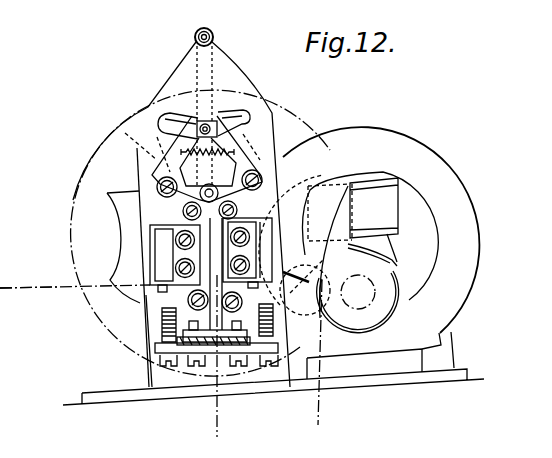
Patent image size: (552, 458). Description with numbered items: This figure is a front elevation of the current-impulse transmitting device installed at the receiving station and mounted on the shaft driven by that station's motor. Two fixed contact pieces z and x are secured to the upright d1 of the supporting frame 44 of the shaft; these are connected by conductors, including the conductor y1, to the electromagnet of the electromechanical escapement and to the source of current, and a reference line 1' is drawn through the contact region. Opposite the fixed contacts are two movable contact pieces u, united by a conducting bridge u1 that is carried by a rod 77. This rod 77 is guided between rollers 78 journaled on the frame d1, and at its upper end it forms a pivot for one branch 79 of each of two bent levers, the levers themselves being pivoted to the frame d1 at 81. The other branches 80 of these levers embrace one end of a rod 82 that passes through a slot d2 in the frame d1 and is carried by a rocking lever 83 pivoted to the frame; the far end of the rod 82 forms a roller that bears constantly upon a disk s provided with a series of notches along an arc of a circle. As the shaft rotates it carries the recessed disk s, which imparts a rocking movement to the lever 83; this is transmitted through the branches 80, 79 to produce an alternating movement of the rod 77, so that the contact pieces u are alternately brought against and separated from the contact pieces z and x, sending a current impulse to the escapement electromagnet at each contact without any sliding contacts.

The upright d1 is at (172, 83).
The slot d2 is at (172, 123).
The rocking lever 83 is at (214, 82).
The rod 82 is at (248, 118).
The branches of bent levers 80 is at (160, 181).
The pivot 81 is at (157, 186).
The branches of bent levers 79 is at (229, 186).
The rollers 78 is at (184, 211).
The rod 77 is at (210, 255).
The disk s is at (128, 238).
The contact piece z is at (147, 293).
The axis line 1' is at (30, 297).
The contact pieces u is at (160, 316).
The contact piece x is at (295, 245).
The conducting bridge u1 is at (225, 420).
The conductor y1 is at (320, 343).
The supporting frame 44 is at (173, 393).